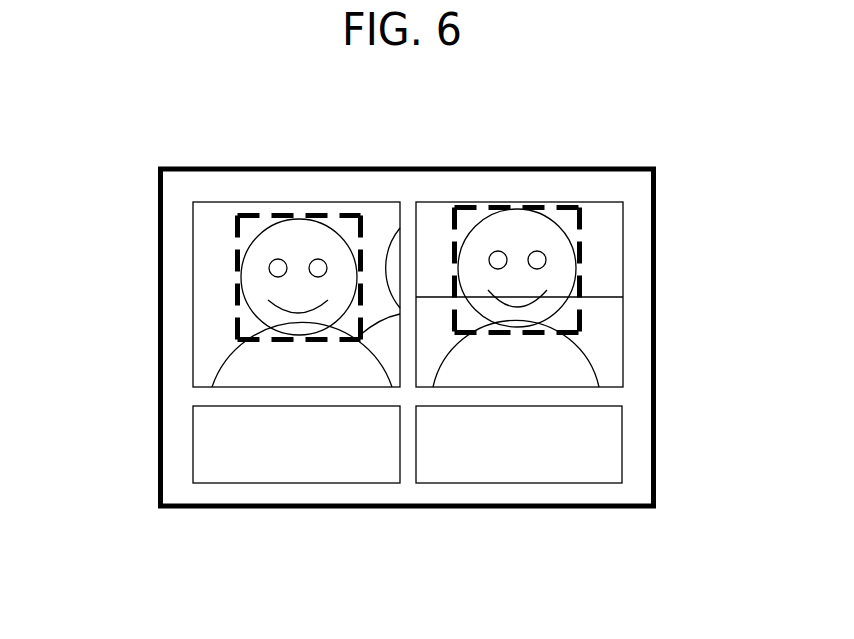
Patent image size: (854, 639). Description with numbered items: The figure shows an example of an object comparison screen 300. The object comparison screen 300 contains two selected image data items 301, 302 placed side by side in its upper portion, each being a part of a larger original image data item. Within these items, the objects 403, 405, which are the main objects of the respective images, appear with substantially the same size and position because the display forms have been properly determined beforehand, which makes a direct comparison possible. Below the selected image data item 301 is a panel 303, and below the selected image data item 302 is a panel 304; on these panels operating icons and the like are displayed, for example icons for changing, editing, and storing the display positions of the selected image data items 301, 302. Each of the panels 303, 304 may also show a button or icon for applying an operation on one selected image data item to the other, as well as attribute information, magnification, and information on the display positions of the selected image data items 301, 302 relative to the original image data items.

The object comparison screen 300 is at (158, 192).
The selected image data item 301 is at (357, 202).
The selected image data item 302 is at (585, 202).
The panel 303 is at (345, 483).
The panel 304 is at (565, 483).
The object 403 is at (235, 275).
The object 405 is at (583, 248).